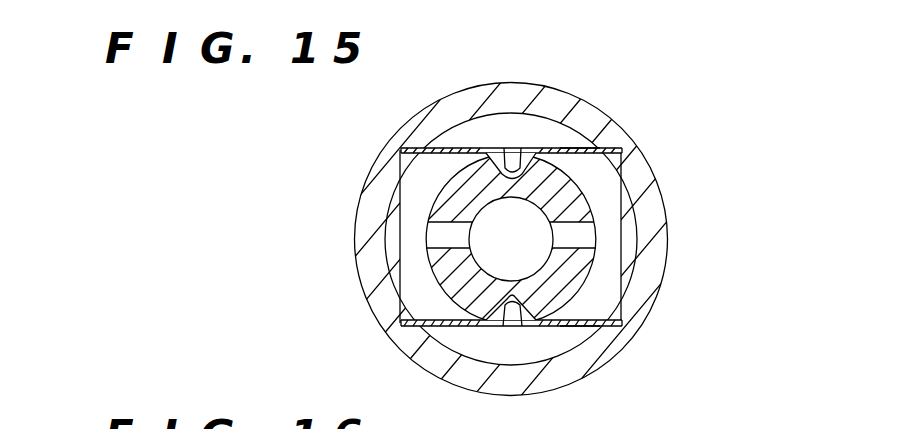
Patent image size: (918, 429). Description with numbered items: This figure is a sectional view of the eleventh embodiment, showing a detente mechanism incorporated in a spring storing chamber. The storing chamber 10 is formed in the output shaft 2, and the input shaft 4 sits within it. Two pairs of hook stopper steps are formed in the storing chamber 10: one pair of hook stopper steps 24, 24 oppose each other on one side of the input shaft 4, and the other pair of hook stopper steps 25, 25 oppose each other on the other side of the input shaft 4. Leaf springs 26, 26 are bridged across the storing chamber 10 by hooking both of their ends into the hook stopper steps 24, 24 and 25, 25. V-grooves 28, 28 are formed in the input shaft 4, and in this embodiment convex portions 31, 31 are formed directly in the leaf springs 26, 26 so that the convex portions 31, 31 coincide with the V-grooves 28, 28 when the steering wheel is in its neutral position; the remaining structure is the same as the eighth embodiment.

The output shaft 2 is at (652, 209).
The input shaft 4 is at (442, 262).
The storing chamber 10 is at (620, 253).
The hook stopper steps 24 is at (402, 148).
The hook stopper steps 25 is at (404, 322).
The leaf springs 26 is at (577, 147).
The V-grooves 28 is at (479, 165).
The convex portions 31 is at (512, 168).